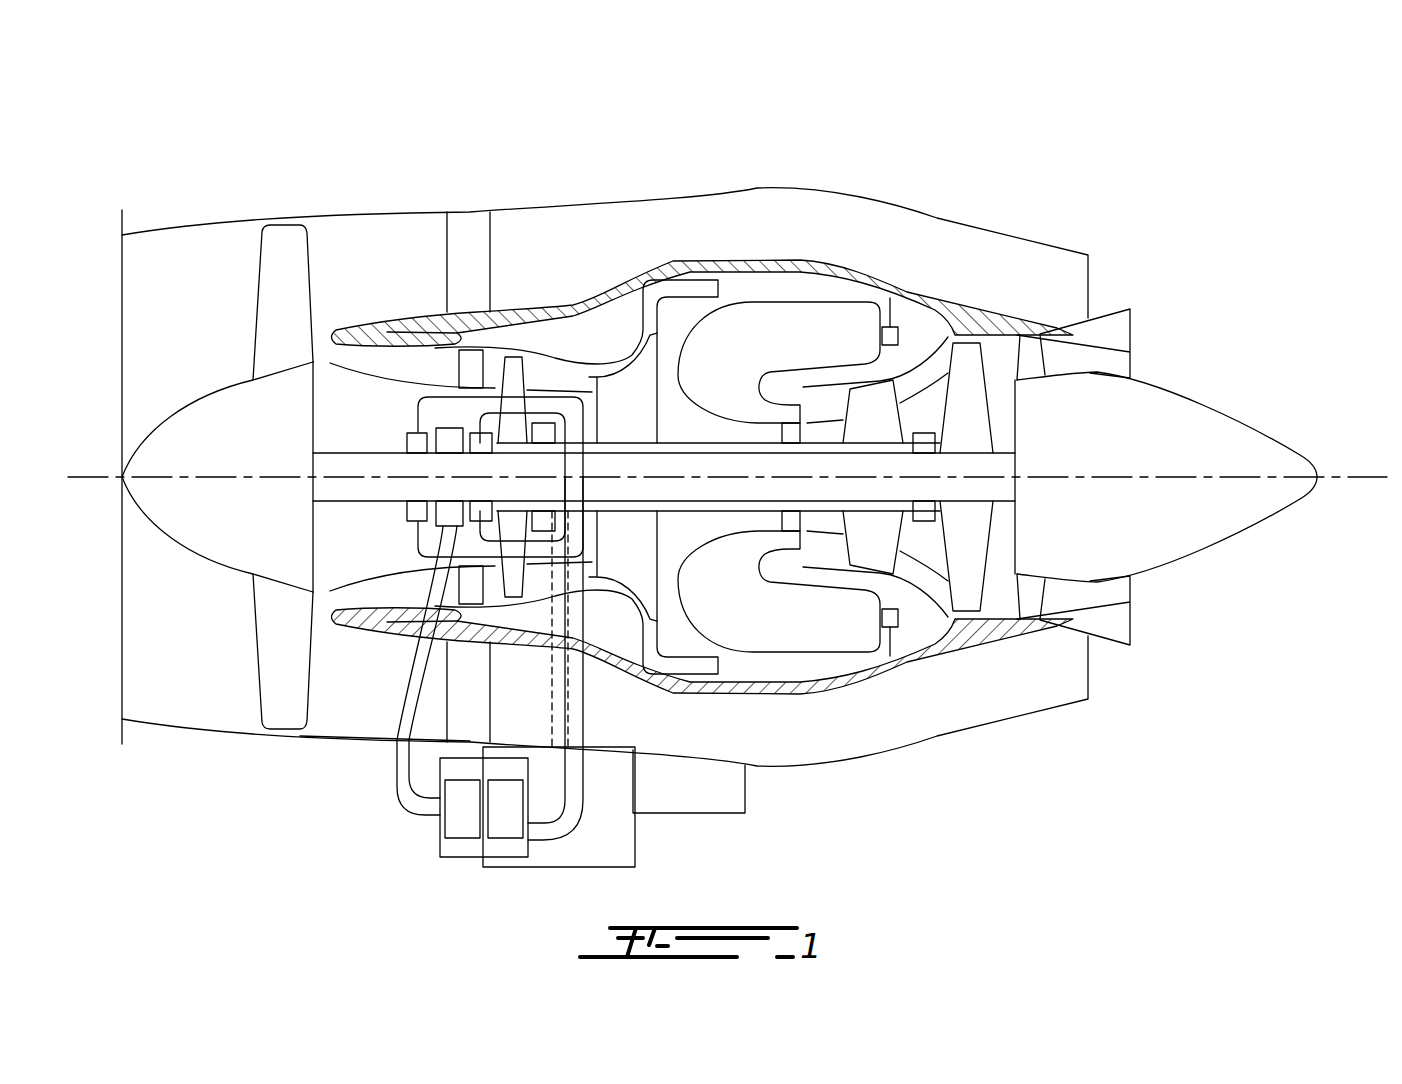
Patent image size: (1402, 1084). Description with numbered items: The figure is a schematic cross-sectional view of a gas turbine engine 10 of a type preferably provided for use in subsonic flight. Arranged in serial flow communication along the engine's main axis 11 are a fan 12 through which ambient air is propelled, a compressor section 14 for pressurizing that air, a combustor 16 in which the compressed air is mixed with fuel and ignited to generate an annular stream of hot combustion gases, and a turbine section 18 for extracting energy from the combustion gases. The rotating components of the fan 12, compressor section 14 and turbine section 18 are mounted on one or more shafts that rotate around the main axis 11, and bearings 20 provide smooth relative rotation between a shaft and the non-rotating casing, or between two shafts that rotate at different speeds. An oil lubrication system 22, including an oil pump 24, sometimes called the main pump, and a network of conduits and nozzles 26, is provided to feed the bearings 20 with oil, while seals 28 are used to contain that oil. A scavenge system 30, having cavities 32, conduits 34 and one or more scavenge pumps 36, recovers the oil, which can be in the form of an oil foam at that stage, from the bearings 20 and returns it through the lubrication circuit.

The gas turbine engine 10 is at (938, 142).
The main axis 11 is at (1358, 475).
The fan 12 is at (283, 647).
The compressor section 14 is at (552, 370).
The combustor 16 is at (780, 325).
The turbine section 18 is at (922, 547).
The bearings 20 is at (450, 428).
The oil lubrication system 22 is at (388, 783).
The oil pump 24 is at (455, 828).
The network of conduits and nozzles 26 is at (393, 737).
The seals 28 is at (412, 432).
The scavenge system 30 is at (582, 767).
The cavities 32 is at (473, 387).
The conduits 34 is at (570, 828).
The scavenge pumps 36 is at (498, 828).